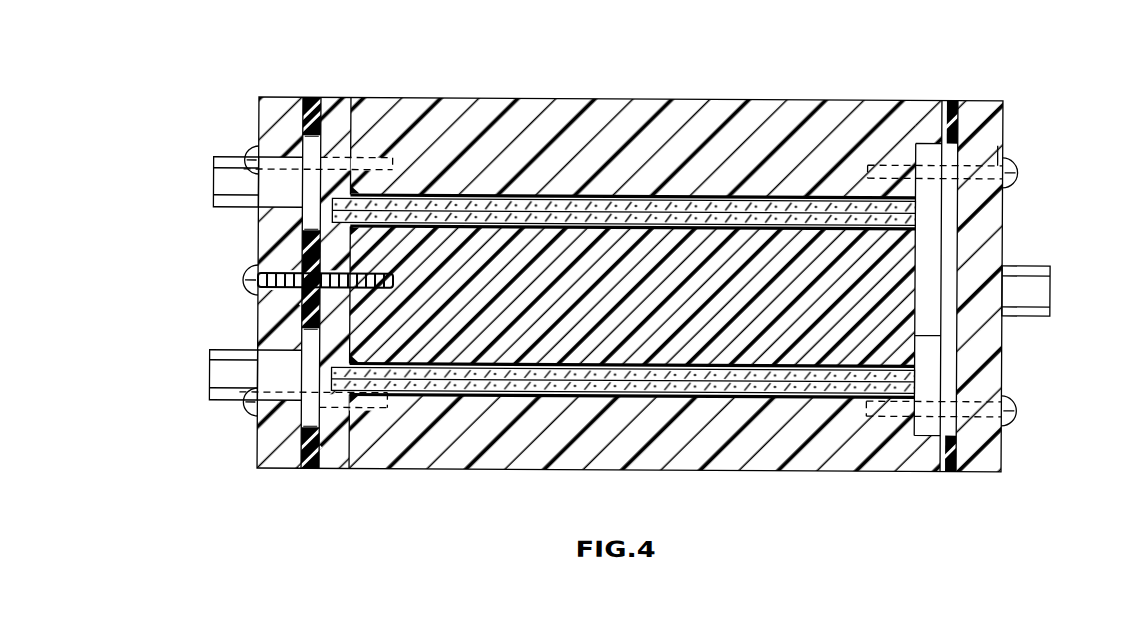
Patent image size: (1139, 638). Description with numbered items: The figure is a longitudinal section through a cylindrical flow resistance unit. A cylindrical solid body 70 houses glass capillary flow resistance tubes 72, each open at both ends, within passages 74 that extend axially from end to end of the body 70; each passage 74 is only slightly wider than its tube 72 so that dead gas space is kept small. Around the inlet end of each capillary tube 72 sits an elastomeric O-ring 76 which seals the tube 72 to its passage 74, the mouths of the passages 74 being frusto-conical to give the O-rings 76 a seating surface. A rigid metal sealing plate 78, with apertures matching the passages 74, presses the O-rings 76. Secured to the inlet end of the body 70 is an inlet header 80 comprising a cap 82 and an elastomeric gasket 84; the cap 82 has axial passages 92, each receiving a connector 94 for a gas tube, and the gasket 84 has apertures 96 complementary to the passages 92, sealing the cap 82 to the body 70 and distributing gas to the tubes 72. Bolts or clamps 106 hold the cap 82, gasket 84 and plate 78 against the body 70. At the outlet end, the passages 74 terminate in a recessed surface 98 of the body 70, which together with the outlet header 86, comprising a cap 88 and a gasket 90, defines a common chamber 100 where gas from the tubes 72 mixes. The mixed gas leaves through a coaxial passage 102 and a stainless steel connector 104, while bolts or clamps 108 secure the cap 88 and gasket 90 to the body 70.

The cylindrical solid body 70 is at (585, 140).
The glass capillary flow resistance tube 72 is at (665, 205).
The passage 74 is at (481, 193).
The O-ring 76 is at (355, 188).
The sealing plate 78 is at (340, 462).
The inlet header 80 is at (298, 96).
The cap 82 is at (262, 448).
The gasket 84 is at (308, 462).
The outlet header 86 is at (975, 98).
The cap 88 is at (978, 462).
The gasket 90 is at (948, 462).
The axial passage 92 is at (288, 178).
The connector 94 is at (255, 178).
The aperture 96 is at (322, 118).
The recessed surface 98 is at (958, 338).
The common chamber 100 is at (935, 376).
The passage 102 is at (985, 278).
The stainless steel connector 104 is at (1035, 305).
The bolts or clamps 106 is at (258, 135).
The bolts or clamps 108 is at (1006, 150).